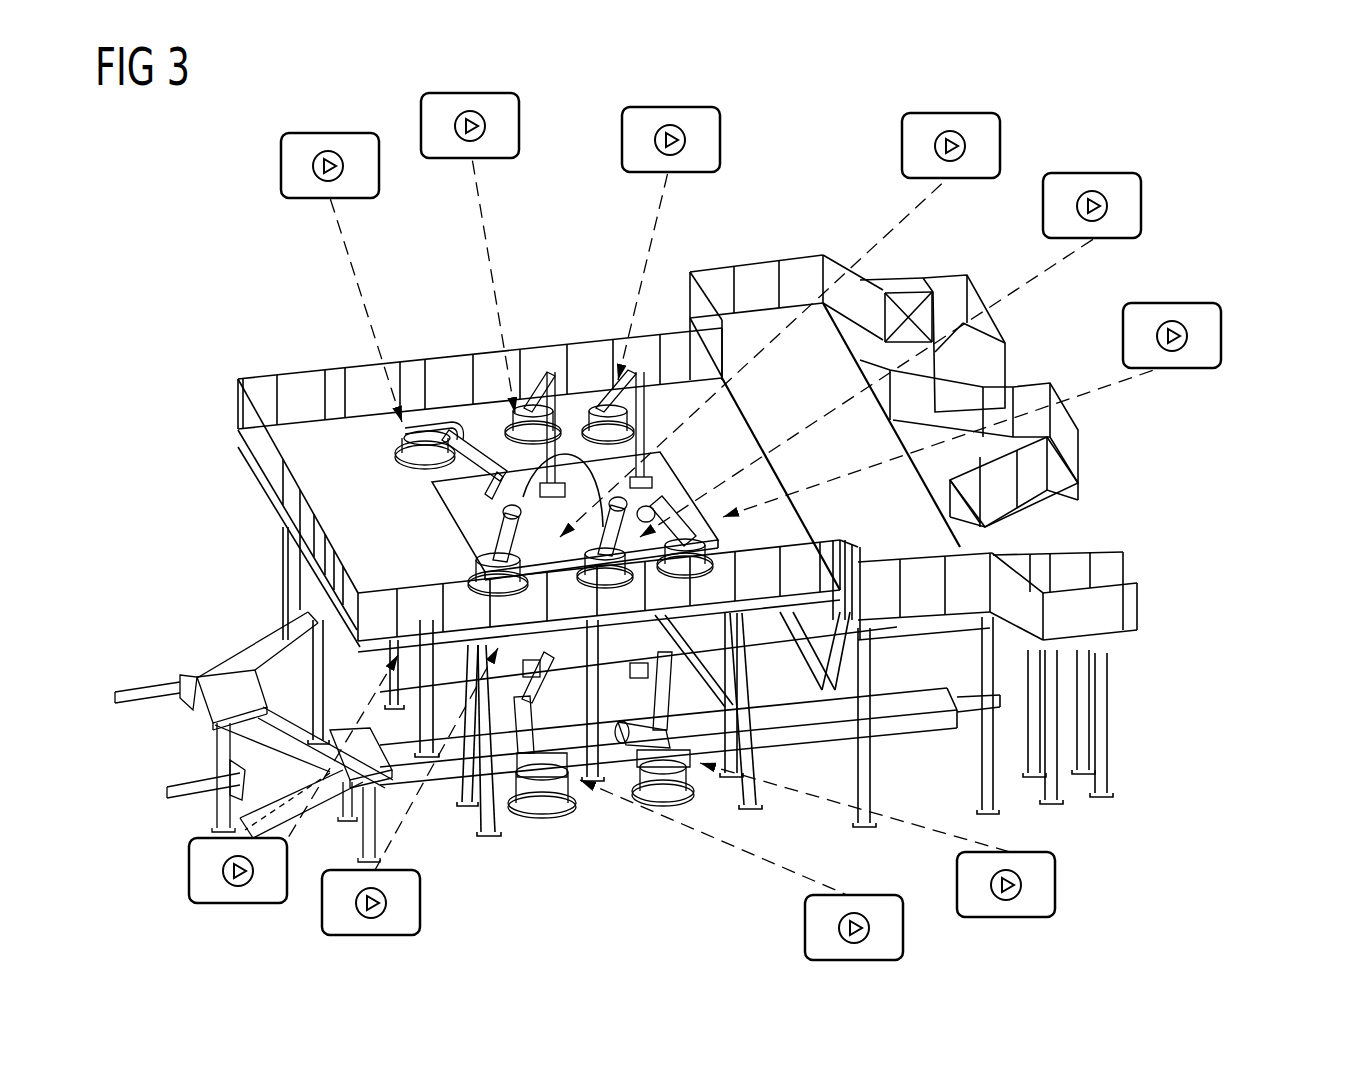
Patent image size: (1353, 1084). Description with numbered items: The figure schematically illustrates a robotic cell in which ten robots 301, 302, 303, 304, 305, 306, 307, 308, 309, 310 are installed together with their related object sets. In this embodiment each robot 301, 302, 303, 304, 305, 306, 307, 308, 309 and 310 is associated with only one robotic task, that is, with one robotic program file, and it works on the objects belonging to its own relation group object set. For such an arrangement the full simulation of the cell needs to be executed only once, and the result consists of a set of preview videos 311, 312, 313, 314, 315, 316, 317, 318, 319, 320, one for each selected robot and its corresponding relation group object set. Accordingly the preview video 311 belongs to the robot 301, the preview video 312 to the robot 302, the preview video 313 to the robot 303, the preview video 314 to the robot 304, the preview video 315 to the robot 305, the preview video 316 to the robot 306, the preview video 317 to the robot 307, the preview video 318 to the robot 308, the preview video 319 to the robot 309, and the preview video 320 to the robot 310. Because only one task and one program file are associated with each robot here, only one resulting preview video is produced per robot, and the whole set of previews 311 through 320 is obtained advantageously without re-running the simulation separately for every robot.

The robot 301 is at (432, 425).
The robot 302 is at (533, 408).
The robot 303 is at (588, 415).
The robot 304 is at (737, 541).
The robot 305 is at (605, 542).
The robot 306 is at (675, 537).
The robot 307 is at (677, 790).
The robot 308 is at (547, 805).
The robot 309 is at (265, 594).
The robot 310 is at (279, 795).
The preview video 311 is at (281, 170).
The preview video 312 is at (519, 125).
The preview video 313 is at (720, 140).
The preview video 314 is at (1000, 145).
The preview video 315 is at (1141, 205).
The preview video 316 is at (1221, 335).
The preview video 317 is at (1055, 885).
The preview video 318 is at (903, 928).
The preview video 319 is at (189, 870).
The preview video 320 is at (322, 903).